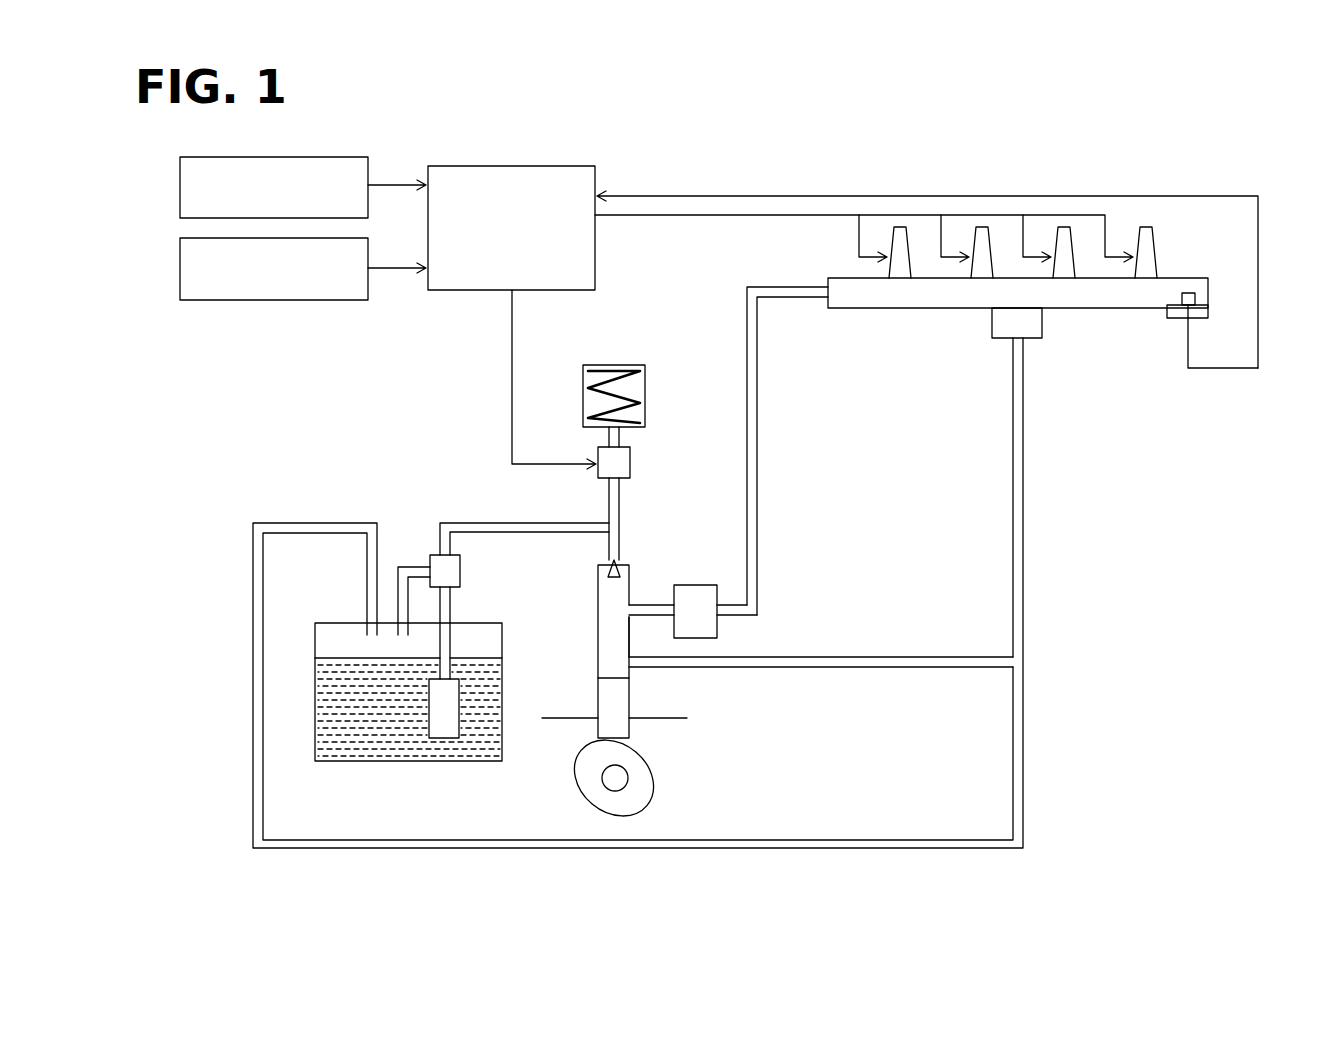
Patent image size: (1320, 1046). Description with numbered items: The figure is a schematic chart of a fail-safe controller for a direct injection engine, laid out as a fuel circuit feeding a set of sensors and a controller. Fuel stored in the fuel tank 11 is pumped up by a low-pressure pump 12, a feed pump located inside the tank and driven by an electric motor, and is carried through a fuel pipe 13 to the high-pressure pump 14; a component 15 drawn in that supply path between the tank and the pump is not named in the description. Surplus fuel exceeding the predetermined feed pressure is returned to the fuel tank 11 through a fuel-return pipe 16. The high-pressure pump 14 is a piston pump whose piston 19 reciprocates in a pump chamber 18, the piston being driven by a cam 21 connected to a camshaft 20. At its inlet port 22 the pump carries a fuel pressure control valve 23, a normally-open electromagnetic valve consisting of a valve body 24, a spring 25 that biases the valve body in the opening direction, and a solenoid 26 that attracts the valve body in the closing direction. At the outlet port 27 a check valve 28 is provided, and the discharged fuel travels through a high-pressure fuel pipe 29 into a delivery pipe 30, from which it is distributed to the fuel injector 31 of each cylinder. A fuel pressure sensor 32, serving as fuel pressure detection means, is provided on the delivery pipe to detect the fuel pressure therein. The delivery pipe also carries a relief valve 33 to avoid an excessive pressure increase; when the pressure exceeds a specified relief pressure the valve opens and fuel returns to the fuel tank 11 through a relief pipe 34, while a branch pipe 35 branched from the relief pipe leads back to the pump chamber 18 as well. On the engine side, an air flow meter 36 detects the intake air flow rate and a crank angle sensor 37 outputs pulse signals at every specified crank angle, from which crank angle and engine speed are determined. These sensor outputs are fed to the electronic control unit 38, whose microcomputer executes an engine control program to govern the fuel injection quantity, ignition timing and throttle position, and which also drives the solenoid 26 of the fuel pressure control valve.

The fuel tank 11 is at (335, 622).
The low-pressure pump 12 is at (427, 723).
The fuel pipe 13 is at (475, 522).
The high-pressure pump 14 is at (651, 692).
The fuel filter 15 is at (437, 555).
The fuel-return pipe 16 is at (397, 587).
The pump chamber 18 is at (598, 622).
The piston 19 is at (598, 688).
The camshaft 20 is at (628, 778).
The cam 21 is at (640, 752).
The inlet port 22 is at (598, 575).
The fuel pressure control valve 23 is at (633, 548).
The valve body 24 is at (630, 583).
The spring 25 is at (645, 385).
The solenoid 26 is at (630, 462).
The outlet port 27 is at (618, 612).
The check valve 28 is at (717, 630).
The high-pressure fuel pipe 29 is at (758, 490).
The delivery pipe 30 is at (860, 310).
The fuel injector 31 is at (1155, 240).
The fuel pressure sensor 32 is at (1178, 322).
The relief valve 33 is at (1045, 318).
The relief pipe 34 is at (1024, 490).
The branch pipe 35 is at (893, 655).
The air flow meter 36 is at (305, 300).
The crank angle sensor 37 is at (305, 157).
The electronic control unit 38 is at (595, 255).